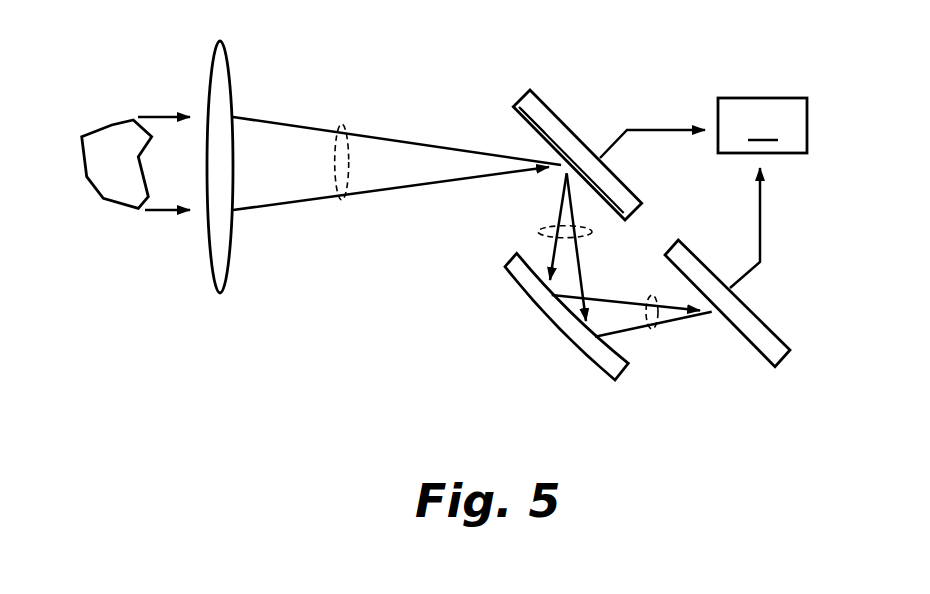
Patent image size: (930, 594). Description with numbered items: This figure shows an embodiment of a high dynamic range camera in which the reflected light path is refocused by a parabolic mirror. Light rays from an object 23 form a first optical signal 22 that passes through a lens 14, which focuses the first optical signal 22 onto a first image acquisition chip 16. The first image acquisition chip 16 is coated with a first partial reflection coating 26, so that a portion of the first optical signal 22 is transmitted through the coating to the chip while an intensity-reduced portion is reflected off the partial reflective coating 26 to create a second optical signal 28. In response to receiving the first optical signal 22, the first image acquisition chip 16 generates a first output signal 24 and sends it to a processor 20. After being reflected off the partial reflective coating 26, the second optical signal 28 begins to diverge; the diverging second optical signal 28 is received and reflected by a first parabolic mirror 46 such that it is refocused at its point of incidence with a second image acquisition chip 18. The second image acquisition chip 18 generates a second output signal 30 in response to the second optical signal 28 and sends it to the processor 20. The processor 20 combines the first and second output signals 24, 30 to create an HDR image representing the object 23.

The lens 14 is at (233, 53).
The first image acquisition chip 16 is at (577, 134).
The second image acquisition chip 18 is at (757, 316).
The processor 20 is at (762, 125).
The first optical signal 22 is at (341, 202).
The object 23 is at (112, 124).
The first output signal 24 is at (661, 134).
The first partial reflection coating 26 is at (512, 113).
The second optical signal 28 is at (538, 232).
The second output signal 30 is at (762, 189).
The first parabolic mirror 46 is at (552, 319).